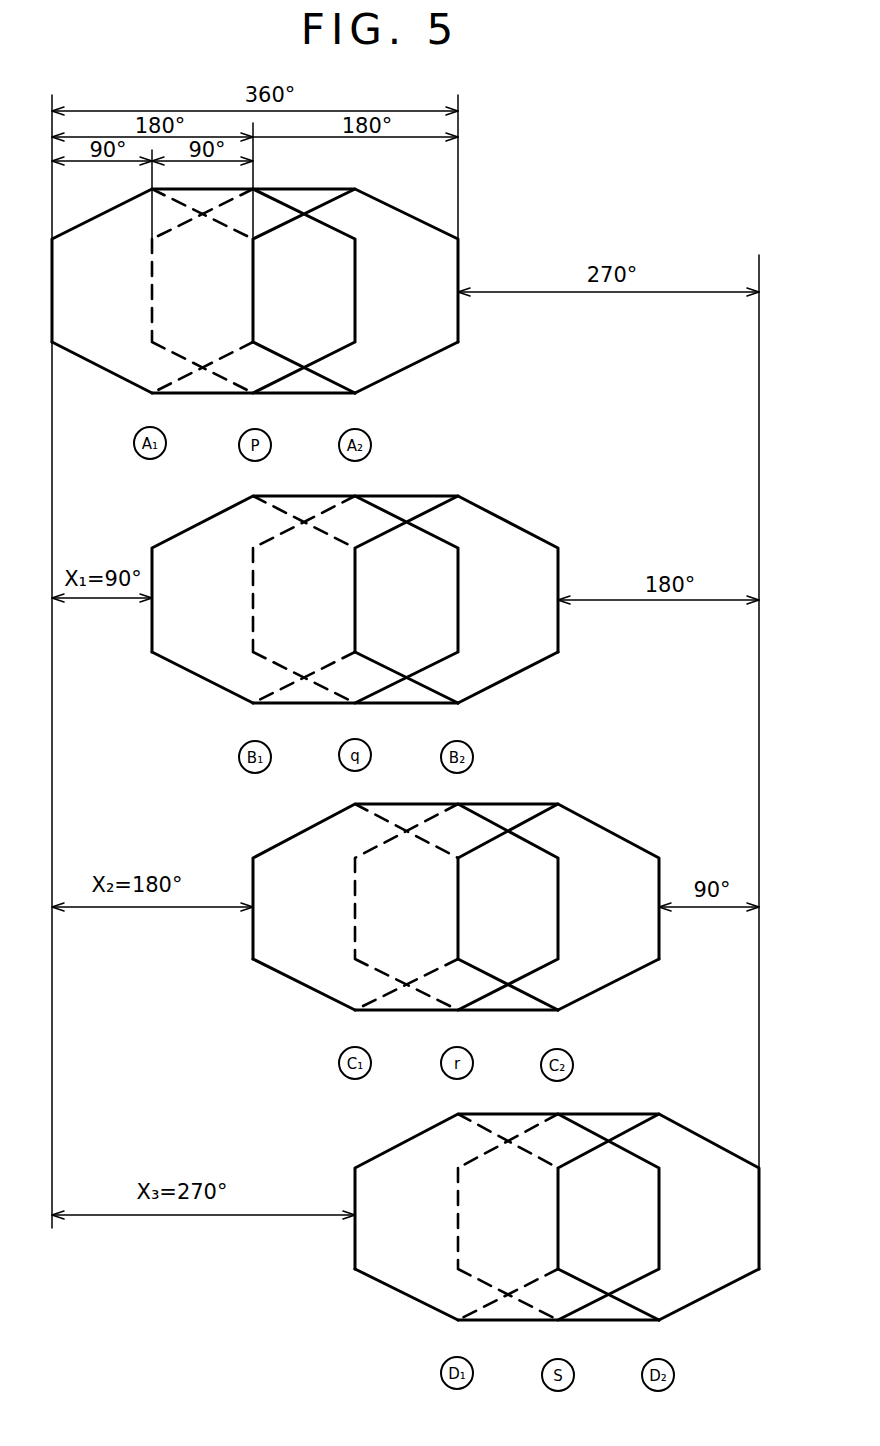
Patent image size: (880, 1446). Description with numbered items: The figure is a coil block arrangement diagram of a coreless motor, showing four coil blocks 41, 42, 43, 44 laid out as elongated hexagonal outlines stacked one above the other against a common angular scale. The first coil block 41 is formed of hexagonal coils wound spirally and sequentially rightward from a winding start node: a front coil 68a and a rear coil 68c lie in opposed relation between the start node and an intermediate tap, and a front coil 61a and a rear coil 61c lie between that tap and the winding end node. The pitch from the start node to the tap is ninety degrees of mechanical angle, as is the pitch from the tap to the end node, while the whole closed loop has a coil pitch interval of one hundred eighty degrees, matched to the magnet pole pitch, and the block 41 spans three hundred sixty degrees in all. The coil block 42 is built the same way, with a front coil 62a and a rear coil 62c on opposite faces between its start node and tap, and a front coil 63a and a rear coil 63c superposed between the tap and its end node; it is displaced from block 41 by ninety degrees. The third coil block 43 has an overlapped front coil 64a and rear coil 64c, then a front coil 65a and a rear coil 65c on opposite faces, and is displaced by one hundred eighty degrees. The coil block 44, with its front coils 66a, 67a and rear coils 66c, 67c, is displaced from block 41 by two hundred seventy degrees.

The coil block 41 is at (73, 322).
The coil block 42 is at (150, 612).
The coil block 43 is at (253, 922).
The coil block 44 is at (355, 1240).
The front coil 68a is at (117, 368).
The rear coil 68c is at (183, 378).
The front coil 61a is at (318, 378).
The rear coil 61c is at (406, 394).
The front coil 62a is at (203, 677).
The rear coil 62c is at (287, 688).
The front coil 63a is at (422, 687).
The rear coil 63c is at (520, 673).
The front coil 64a is at (303, 987).
The rear coil 64c is at (387, 997).
The front coil 65a is at (508, 1017).
The rear coil 65c is at (603, 987).
The front coil 66a is at (412, 1297).
The rear coil 66c is at (490, 1308).
The front coil 67a is at (627, 1307).
The rear coil 67c is at (715, 1297).